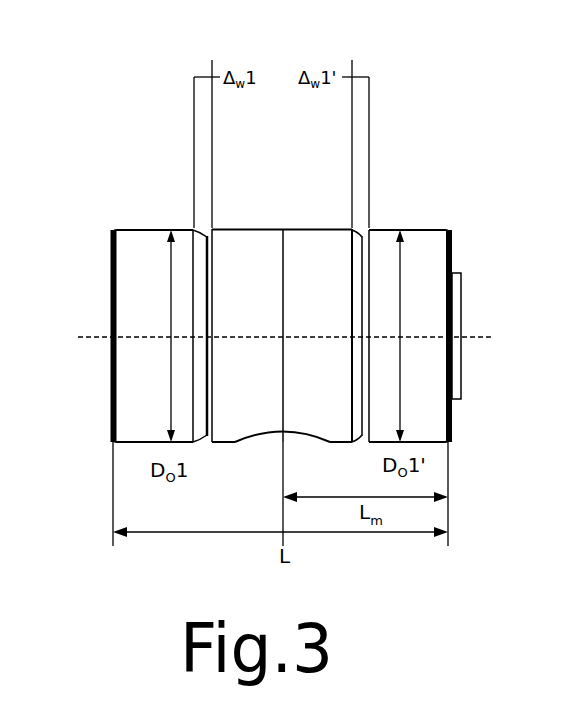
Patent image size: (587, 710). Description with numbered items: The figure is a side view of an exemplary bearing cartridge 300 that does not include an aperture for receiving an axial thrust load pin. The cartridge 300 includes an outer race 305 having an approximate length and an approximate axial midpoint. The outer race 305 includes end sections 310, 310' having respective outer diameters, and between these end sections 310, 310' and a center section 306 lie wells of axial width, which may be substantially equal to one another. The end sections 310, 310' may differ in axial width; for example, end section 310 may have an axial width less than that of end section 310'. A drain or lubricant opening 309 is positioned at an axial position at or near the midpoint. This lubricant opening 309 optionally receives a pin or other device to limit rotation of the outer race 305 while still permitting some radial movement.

The cartridge 300 is at (132, 74).
The outer race 305 is at (131, 229).
The center section 306 is at (270, 382).
The lubricant opening 309 is at (280, 437).
The end section 310 is at (160, 298).
The end section 310' is at (414, 302).